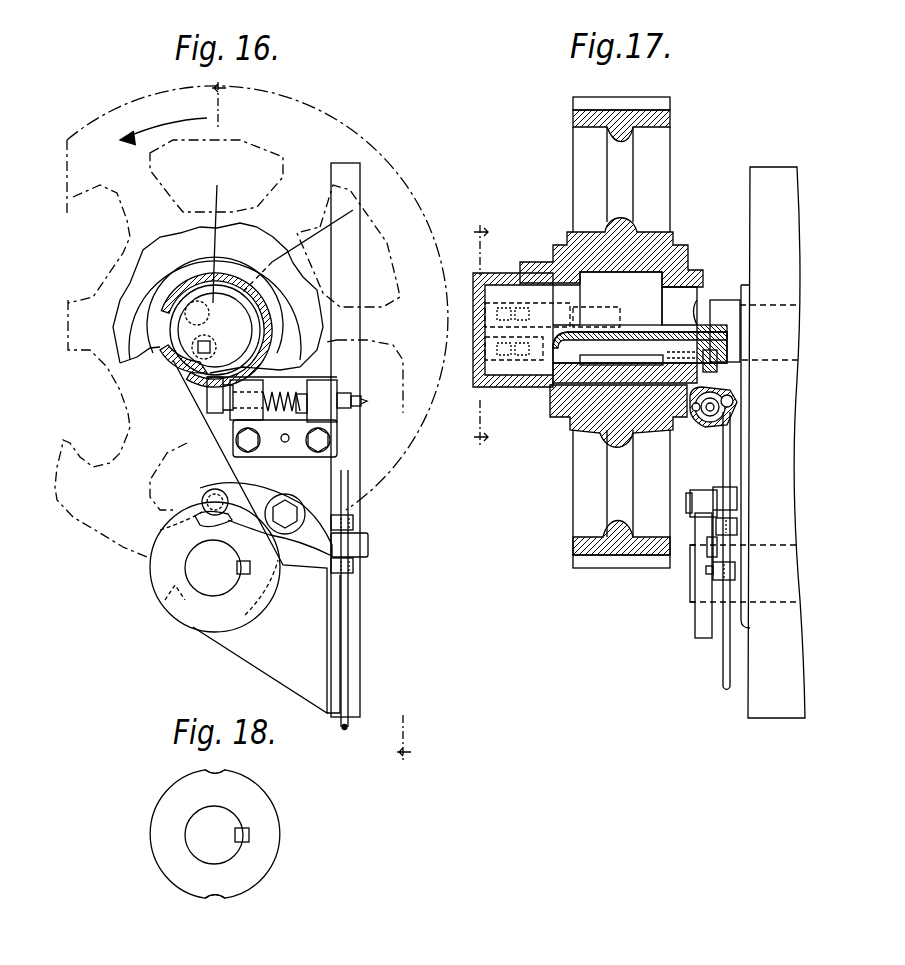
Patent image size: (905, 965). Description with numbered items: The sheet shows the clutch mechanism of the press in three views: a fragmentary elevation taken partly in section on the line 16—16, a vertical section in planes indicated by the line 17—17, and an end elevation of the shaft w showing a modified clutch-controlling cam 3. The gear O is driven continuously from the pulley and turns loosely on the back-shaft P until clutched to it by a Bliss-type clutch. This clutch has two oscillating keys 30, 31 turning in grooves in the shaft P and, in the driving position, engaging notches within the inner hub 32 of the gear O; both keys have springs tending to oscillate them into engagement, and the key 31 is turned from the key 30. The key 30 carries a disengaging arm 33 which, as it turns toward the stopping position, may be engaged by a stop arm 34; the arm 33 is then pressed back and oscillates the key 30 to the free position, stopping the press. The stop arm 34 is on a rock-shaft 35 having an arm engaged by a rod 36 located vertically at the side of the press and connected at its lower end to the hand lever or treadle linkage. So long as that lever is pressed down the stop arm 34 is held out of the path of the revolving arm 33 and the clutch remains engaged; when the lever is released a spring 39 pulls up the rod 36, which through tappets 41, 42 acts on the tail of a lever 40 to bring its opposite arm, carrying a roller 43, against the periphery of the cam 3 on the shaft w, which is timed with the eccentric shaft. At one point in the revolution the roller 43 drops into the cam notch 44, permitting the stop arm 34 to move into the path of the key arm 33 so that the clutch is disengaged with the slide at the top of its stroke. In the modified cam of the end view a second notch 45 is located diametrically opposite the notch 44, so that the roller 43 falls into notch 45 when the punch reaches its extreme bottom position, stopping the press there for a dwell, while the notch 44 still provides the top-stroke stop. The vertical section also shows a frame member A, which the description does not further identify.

In FIG. 16, the gear O is at (302, 110).
In FIG. 17, the gear O is at (578, 143).
In FIG. 16, the back-shaft P is at (203, 236).
In FIG. 17, the back-shaft P is at (730, 300).
In FIG. 17, the frame A is at (782, 672).
In FIG. 16, the shaft w is at (217, 568).
In FIG. 18, the shaft w is at (217, 835).
In FIG. 17, the shaft w is at (690, 596).
In FIG. 16, the clutch-controlling cam 3 is at (188, 617).
In FIG. 18, the clutch-controlling cam 3 is at (270, 820).
In FIG. 17, the clutch-controlling cam 3 is at (697, 622).
In FIG. 17, the section line 16— 16 is at (481, 337).
In FIG. 16, the section line 17— 17 is at (310, 425).
In FIG. 16, the oscillating key 30 is at (215, 330).
In FIG. 17, the oscillating key 30 is at (697, 325).
In FIG. 16, the oscillating key 31 is at (185, 300).
In FIG. 17, the oscillating key 31 is at (548, 320).
In FIG. 17, the inner hub 32 is at (598, 380).
In FIG. 16, the disengaging arm 33 is at (170, 362).
In FIG. 17, the disengaging arm 33 is at (718, 367).
In FIG. 16, the stop arm 34 is at (222, 383).
In FIG. 17, the stop arm 34 is at (730, 392).
In FIG. 16, the rock-shaft 35 is at (252, 536).
In FIG. 17, the rock-shaft 35 is at (714, 410).
In FIG. 16, the rod 36 is at (350, 484).
In FIG. 17, the rod 36 is at (723, 462).
In FIG. 16, the spring 39 is at (292, 448).
In FIG. 16, the lever 40 is at (272, 478).
In FIG. 17, the lever 40 is at (712, 545).
In FIG. 16, the tappet 41 is at (355, 522).
In FIG. 17, the tappet 41 is at (740, 523).
In FIG. 16, the tappet 42 is at (355, 570).
In FIG. 17, the tappet 42 is at (738, 571).
In FIG. 16, the roller 43 is at (204, 497).
In FIG. 17, the roller 43 is at (695, 490).
In FIG. 16, the cam notch 44 is at (200, 520).
In FIG. 18, the cam notch 44 is at (210, 772).
In FIG. 18, the notch 45 is at (212, 900).